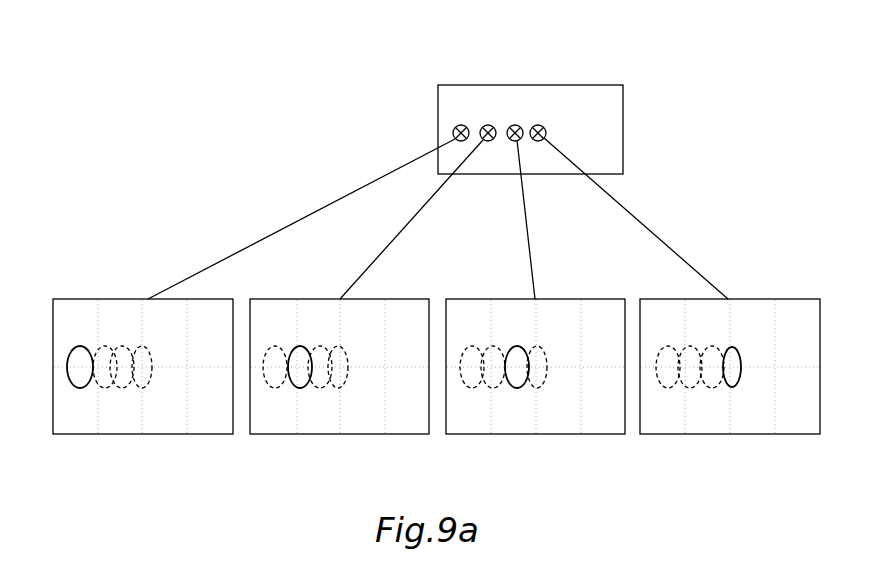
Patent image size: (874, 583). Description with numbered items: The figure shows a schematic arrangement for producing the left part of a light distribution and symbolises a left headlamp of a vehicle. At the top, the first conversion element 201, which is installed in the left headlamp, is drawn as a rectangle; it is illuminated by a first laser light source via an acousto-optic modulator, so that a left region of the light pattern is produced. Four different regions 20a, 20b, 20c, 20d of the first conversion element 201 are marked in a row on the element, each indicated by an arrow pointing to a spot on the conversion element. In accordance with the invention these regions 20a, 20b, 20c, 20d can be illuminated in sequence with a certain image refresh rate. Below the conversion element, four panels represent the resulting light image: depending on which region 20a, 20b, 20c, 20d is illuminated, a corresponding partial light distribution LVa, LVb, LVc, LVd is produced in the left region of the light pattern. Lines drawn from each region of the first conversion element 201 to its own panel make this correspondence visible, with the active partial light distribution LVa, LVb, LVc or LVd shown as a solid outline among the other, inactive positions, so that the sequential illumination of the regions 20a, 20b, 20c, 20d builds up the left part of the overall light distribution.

The first conversion element 201 is at (633, 140).
The region 20a is at (537, 117).
The region 20b is at (508, 117).
The region 20c is at (485, 117).
The region 20d is at (463, 117).
The partial light distribution LVa is at (735, 391).
The partial light distribution LVb is at (517, 389).
The partial light distribution LVc is at (301, 389).
The partial light distribution LVd is at (68, 388).